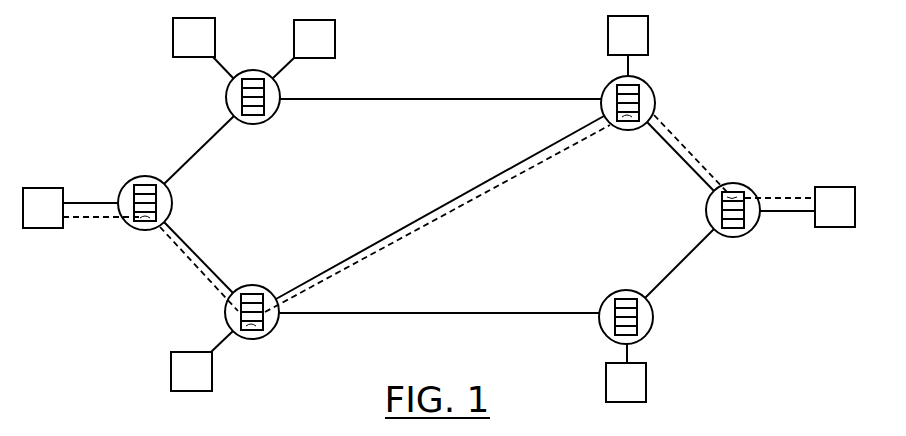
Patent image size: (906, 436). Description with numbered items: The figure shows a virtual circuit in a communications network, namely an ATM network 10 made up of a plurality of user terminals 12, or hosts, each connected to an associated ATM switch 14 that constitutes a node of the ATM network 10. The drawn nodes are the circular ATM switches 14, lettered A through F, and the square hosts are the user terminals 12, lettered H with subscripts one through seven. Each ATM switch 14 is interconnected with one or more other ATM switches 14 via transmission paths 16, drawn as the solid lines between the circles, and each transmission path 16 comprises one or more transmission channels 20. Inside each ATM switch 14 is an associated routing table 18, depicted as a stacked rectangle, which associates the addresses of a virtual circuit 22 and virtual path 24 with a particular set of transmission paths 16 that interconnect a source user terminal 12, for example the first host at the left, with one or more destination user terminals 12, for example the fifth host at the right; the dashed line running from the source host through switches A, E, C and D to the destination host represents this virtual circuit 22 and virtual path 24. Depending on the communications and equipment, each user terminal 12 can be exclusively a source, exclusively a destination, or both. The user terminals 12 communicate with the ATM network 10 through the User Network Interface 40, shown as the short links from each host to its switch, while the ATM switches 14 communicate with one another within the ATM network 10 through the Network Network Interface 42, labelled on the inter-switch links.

The ATM network 10 is at (756, 67).
The user terminal 12 is at (53, 229).
The ATM switch 14 is at (270, 122).
The transmission path 16 is at (200, 150).
The routing table 18 is at (218, 98).
The transmission channel 20 is at (496, 178).
The virtual circuit 22 is at (202, 278).
The virtual path 24 is at (214, 291).
The User Network Interface (UNI) 40 is at (85, 202).
The Network Network Interface (NNI) 42 is at (213, 133).